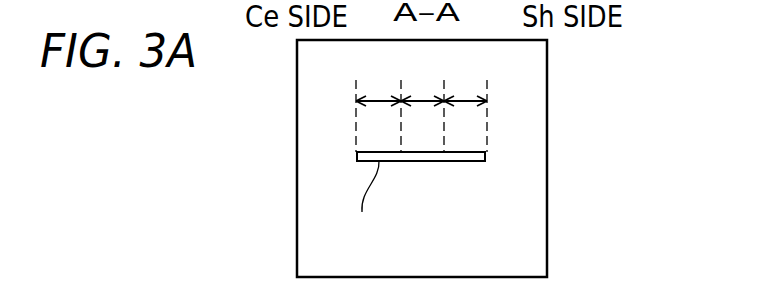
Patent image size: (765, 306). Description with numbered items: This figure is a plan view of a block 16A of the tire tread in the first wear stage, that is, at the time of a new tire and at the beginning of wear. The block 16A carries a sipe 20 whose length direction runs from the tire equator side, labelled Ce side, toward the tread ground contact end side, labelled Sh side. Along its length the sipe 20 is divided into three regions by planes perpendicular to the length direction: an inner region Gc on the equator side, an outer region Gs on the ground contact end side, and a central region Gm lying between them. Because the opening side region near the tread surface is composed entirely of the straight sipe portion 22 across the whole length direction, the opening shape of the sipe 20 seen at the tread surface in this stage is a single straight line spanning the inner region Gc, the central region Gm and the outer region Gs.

The dielectric substrate / housing section 16A is at (547, 248).
The sipe 20 is at (486, 157).
The straight sipe portion 22 is at (357, 204).
The inner region Gc is at (378, 98).
The central region Gm is at (421, 98).
The outer region Gs is at (467, 98).